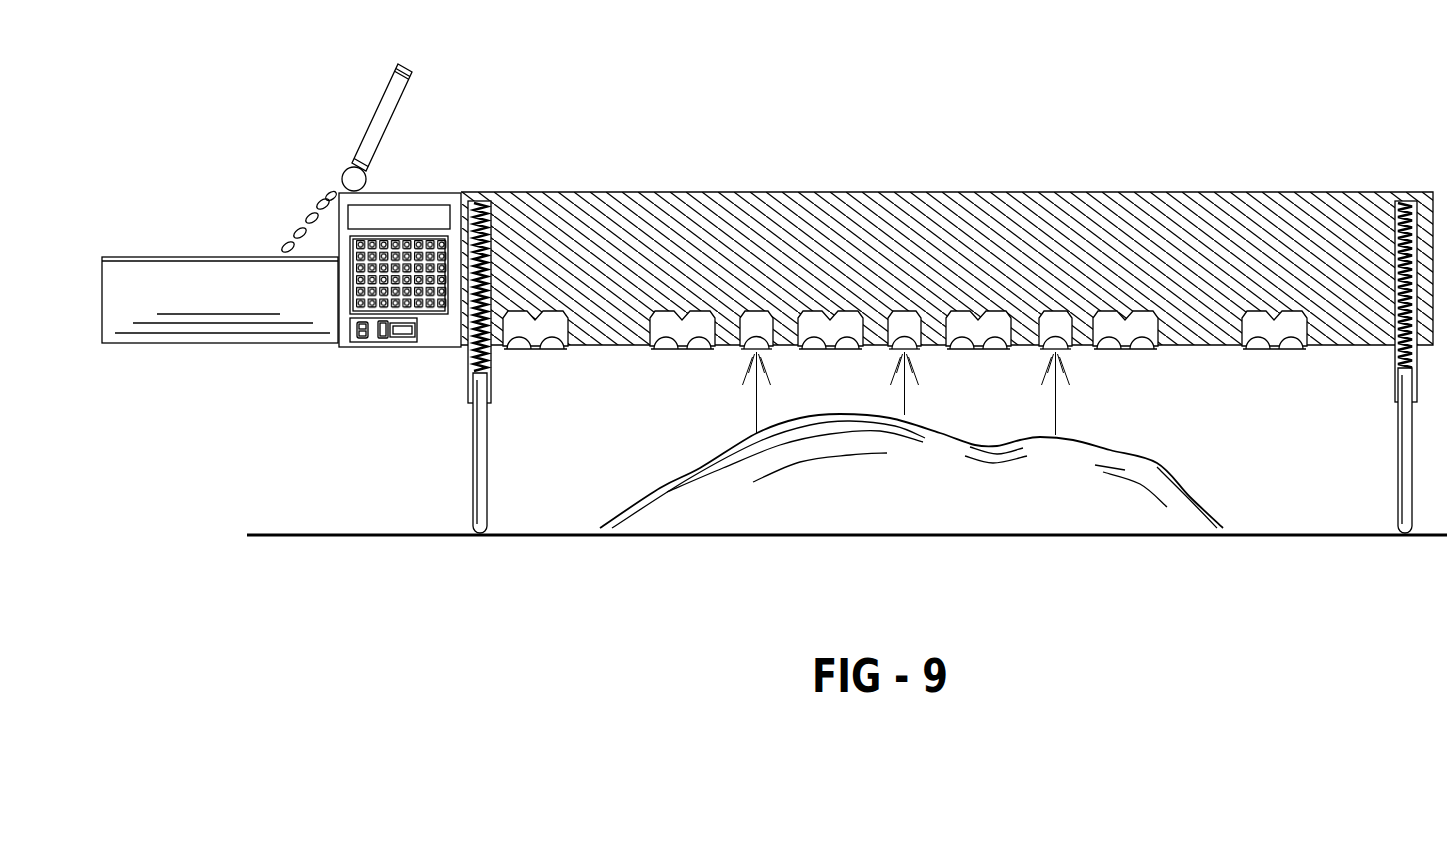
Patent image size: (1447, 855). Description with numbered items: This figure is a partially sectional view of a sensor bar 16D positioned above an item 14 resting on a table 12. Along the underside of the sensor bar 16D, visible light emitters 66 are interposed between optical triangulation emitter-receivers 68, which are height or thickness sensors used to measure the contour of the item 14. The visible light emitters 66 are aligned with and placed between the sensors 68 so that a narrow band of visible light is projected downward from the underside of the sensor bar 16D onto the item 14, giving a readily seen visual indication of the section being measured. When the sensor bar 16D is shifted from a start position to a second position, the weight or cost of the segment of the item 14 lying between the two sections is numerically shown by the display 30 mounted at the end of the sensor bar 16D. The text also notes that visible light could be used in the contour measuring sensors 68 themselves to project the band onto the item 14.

The table 12 is at (358, 534).
The item 14 is at (800, 507).
The sensor bar 16D is at (538, 200).
The display 30 is at (377, 108).
The visible light emitters 66 is at (761, 316).
The optical triangulation emitter-receiver 68 is at (848, 317).